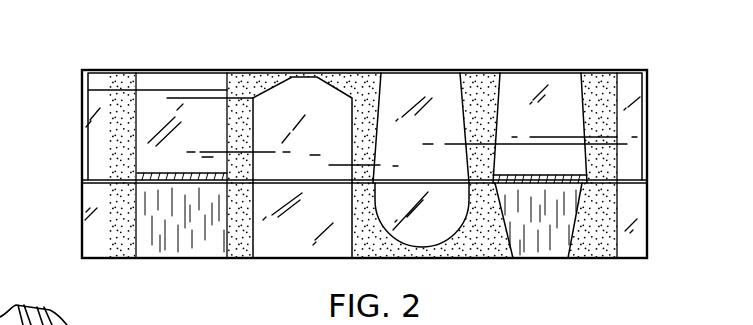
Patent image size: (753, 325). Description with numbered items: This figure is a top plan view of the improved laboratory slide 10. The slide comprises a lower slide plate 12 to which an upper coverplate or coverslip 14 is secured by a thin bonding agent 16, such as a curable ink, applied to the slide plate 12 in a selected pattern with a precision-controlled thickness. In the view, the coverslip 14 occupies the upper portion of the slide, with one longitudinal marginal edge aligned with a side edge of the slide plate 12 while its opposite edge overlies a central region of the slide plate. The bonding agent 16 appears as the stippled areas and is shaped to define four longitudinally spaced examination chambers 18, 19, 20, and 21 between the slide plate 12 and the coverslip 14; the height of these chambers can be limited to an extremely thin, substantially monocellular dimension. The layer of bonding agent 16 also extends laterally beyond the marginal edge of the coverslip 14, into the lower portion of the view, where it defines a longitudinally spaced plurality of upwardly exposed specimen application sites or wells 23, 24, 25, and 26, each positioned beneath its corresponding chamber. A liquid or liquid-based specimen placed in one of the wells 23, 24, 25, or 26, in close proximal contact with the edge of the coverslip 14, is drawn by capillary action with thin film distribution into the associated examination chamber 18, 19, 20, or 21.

The laboratory slide 10 is at (645, 61).
The slide plate 12 is at (92, 233).
The coverslip 14 is at (91, 98).
The bonding agent 16 is at (484, 88).
The examination chamber 18 is at (551, 101).
The examination chamber 19 is at (428, 112).
The examination chamber 20 is at (298, 112).
The examination chamber 21 is at (168, 112).
The well 23 is at (535, 237).
The well 24 is at (425, 233).
The well 25 is at (293, 241).
The well 26 is at (178, 238).